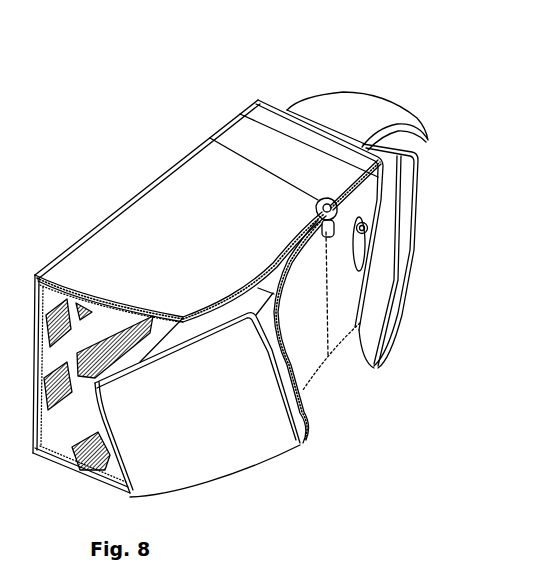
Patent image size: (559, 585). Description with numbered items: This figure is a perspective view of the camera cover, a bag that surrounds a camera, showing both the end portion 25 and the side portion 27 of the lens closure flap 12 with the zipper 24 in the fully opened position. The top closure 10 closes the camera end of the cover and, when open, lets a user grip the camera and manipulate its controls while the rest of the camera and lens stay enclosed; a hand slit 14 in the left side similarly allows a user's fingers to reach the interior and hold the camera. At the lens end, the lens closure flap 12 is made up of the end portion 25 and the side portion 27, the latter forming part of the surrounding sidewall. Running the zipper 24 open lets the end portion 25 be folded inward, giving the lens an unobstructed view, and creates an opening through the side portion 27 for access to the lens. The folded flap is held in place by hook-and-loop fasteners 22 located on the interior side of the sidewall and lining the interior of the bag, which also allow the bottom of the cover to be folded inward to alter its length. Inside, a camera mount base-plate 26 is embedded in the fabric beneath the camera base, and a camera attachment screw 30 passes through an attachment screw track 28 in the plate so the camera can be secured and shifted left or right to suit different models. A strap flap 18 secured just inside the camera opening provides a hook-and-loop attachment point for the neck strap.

The top closure 10 is at (383, 332).
The lens closure flap 12 is at (210, 452).
The left side hand slit 14 is at (297, 140).
The strap flap 18 is at (362, 120).
The hook-and-loop fasteners 22 is at (52, 335).
The zipper 24 is at (326, 228).
The end portion 25 is at (247, 433).
The camera mount base-plate 26 is at (350, 293).
The side portion 27 is at (302, 348).
The attachment screw track 28 is at (357, 252).
The camera attachment screw 30 is at (366, 227).